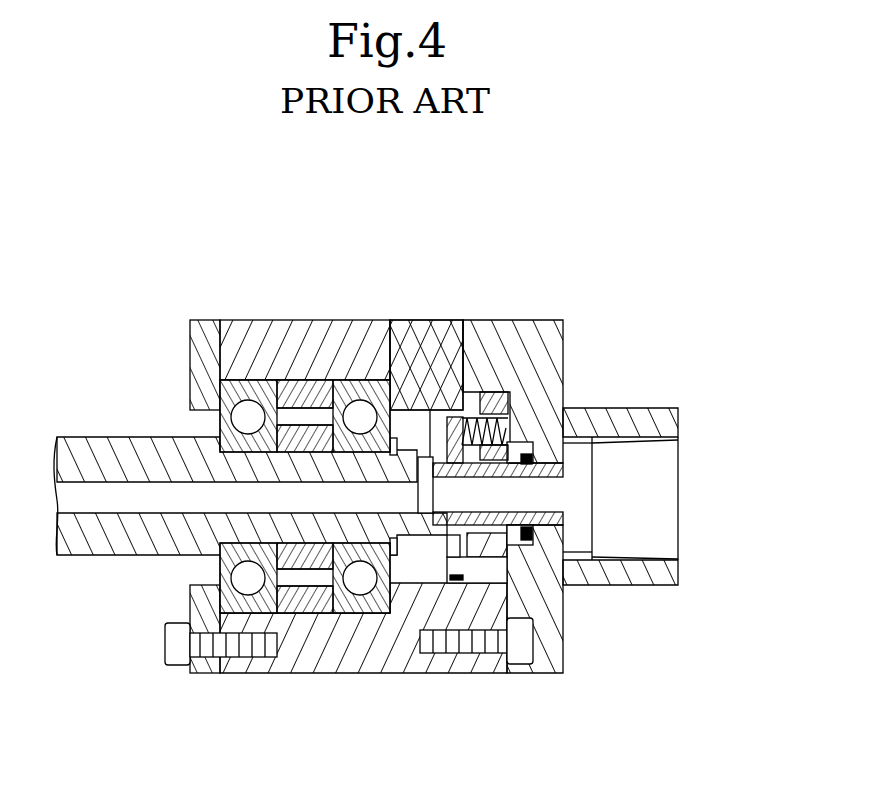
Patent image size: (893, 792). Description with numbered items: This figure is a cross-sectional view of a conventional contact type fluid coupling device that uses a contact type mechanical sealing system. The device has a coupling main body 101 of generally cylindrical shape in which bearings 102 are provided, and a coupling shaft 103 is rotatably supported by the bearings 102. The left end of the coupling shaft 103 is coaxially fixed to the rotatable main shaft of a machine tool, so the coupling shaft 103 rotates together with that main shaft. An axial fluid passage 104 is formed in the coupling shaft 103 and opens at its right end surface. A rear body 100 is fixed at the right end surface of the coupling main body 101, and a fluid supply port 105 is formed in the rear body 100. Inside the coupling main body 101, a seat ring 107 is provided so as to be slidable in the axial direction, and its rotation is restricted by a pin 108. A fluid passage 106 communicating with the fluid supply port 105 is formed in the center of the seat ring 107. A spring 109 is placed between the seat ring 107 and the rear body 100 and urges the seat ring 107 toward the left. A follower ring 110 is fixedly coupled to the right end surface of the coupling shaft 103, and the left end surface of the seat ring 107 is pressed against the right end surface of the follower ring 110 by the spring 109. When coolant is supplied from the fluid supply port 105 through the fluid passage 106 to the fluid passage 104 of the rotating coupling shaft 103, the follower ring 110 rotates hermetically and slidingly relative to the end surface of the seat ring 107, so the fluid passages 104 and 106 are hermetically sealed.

The rear body 100 is at (552, 378).
The coupling main body 101 is at (300, 335).
The bearings 102 is at (362, 585).
The coupling shaft 103 is at (118, 450).
The axial fluid passage 104 is at (133, 505).
The fluid supply port 105 is at (657, 447).
The fluid passage 106 is at (538, 479).
The seat ring 107 is at (435, 455).
The pin 108 is at (513, 562).
The spring 109 is at (500, 440).
The follower ring 110 is at (418, 470).